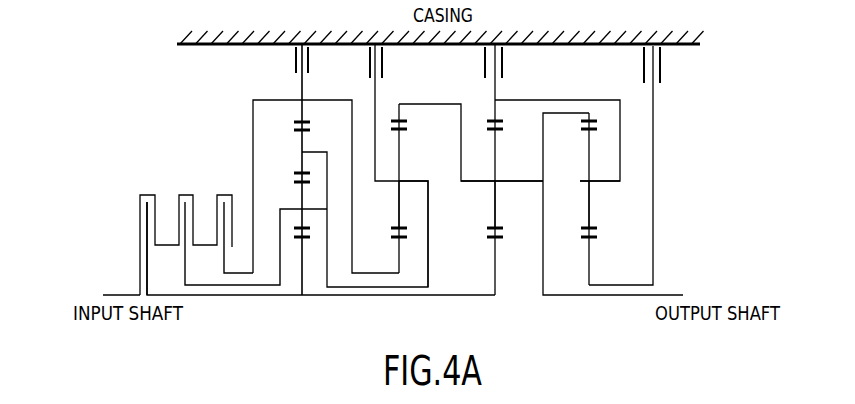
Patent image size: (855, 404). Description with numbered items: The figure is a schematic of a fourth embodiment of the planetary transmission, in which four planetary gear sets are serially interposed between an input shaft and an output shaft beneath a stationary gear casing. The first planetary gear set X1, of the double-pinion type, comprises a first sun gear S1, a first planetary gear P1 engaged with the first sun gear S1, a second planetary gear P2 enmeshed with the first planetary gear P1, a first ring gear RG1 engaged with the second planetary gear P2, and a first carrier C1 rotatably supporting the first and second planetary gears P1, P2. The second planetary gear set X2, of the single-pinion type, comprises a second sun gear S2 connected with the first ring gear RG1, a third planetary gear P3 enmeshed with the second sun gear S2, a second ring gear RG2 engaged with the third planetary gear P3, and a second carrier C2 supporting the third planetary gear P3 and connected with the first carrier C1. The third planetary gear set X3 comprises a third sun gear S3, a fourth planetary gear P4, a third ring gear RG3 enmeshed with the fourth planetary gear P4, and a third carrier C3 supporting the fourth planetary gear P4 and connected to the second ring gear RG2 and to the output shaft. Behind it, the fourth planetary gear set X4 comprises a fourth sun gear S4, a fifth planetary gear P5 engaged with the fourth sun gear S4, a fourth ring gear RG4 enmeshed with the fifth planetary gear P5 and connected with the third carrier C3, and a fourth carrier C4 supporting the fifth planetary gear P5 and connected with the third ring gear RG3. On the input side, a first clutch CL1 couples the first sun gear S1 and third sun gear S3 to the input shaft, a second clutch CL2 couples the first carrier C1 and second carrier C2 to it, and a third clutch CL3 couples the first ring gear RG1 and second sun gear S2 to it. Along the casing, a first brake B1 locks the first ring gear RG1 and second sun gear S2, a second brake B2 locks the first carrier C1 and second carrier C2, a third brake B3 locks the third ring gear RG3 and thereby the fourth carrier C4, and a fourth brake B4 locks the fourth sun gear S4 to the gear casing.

The first clutch CL1 is at (147, 188).
The second clutch CL2 is at (184, 192).
The third clutch CL3 is at (221, 192).
The first brake B1 is at (288, 58).
The second brake B2 is at (391, 59).
The third brake B3 is at (510, 65).
The fourth brake B4 is at (669, 60).
The first ring gear RG1 is at (301, 105).
The second ring gear RG2 is at (402, 113).
The third ring gear RG3 is at (497, 103).
The fourth ring gear RG4 is at (592, 115).
The first planetary gear P1 is at (301, 190).
The second planetary gear P2 is at (301, 134).
The third planetary gear P3 is at (399, 198).
The fourth planetary gear P4 is at (495, 200).
The fifth planetary gear P5 is at (589, 205).
The first sun gear S1 is at (301, 244).
The second sun gear S2 is at (399, 243).
The third sun gear S3 is at (495, 245).
The fourth sun gear S4 is at (589, 243).
The first carrier C1 is at (318, 152).
The second carrier C2 is at (412, 181).
The third carrier C3 is at (507, 181).
The fourth carrier C4 is at (608, 181).
The first planetary gear set X1 is at (309, 250).
The second planetary gear set X2 is at (409, 251).
The third planetary gear set X3 is at (500, 258).
The fourth planetary gear set X4 is at (582, 255).